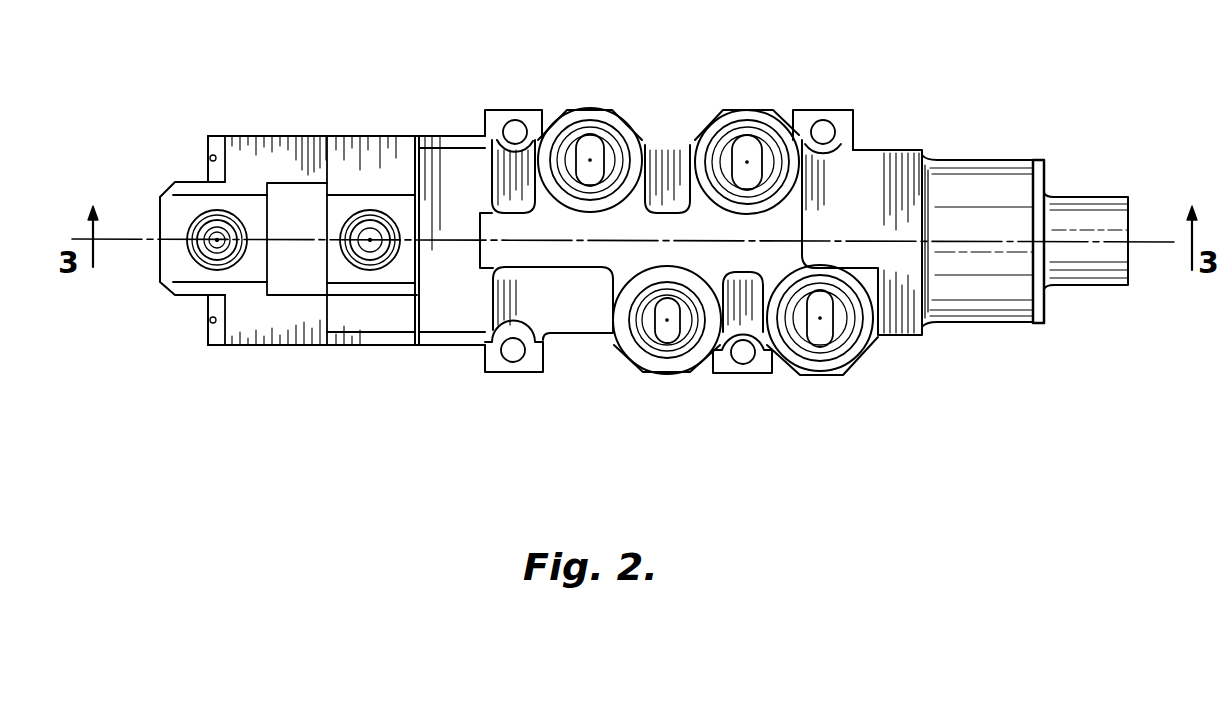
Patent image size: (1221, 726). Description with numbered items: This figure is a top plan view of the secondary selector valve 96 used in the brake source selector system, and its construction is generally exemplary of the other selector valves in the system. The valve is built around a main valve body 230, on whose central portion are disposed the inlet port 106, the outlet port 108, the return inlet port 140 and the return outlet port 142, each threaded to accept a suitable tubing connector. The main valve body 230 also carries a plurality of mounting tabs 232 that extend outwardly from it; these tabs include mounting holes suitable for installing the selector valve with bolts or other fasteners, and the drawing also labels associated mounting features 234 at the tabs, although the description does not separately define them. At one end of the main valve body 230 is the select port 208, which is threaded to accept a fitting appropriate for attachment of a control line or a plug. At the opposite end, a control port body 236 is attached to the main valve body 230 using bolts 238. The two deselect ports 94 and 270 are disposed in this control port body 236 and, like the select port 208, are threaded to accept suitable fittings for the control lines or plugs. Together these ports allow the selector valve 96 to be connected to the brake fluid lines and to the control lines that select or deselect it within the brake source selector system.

The deselect port 94 is at (375, 211).
The secondary selector valve 96 is at (915, 357).
The inlet port 106 is at (590, 124).
The outlet port 108 is at (657, 354).
The return inlet port 140 is at (838, 354).
The return outlet port 142 is at (752, 118).
The select port 208 is at (1128, 209).
The main valve body 230 is at (1017, 324).
The mounting tabs 232 is at (520, 110).
The mounting lug 234 is at (505, 129).
The control port body 236 is at (285, 138).
The bolts 238 is at (207, 157).
The deselect port 270 is at (190, 227).